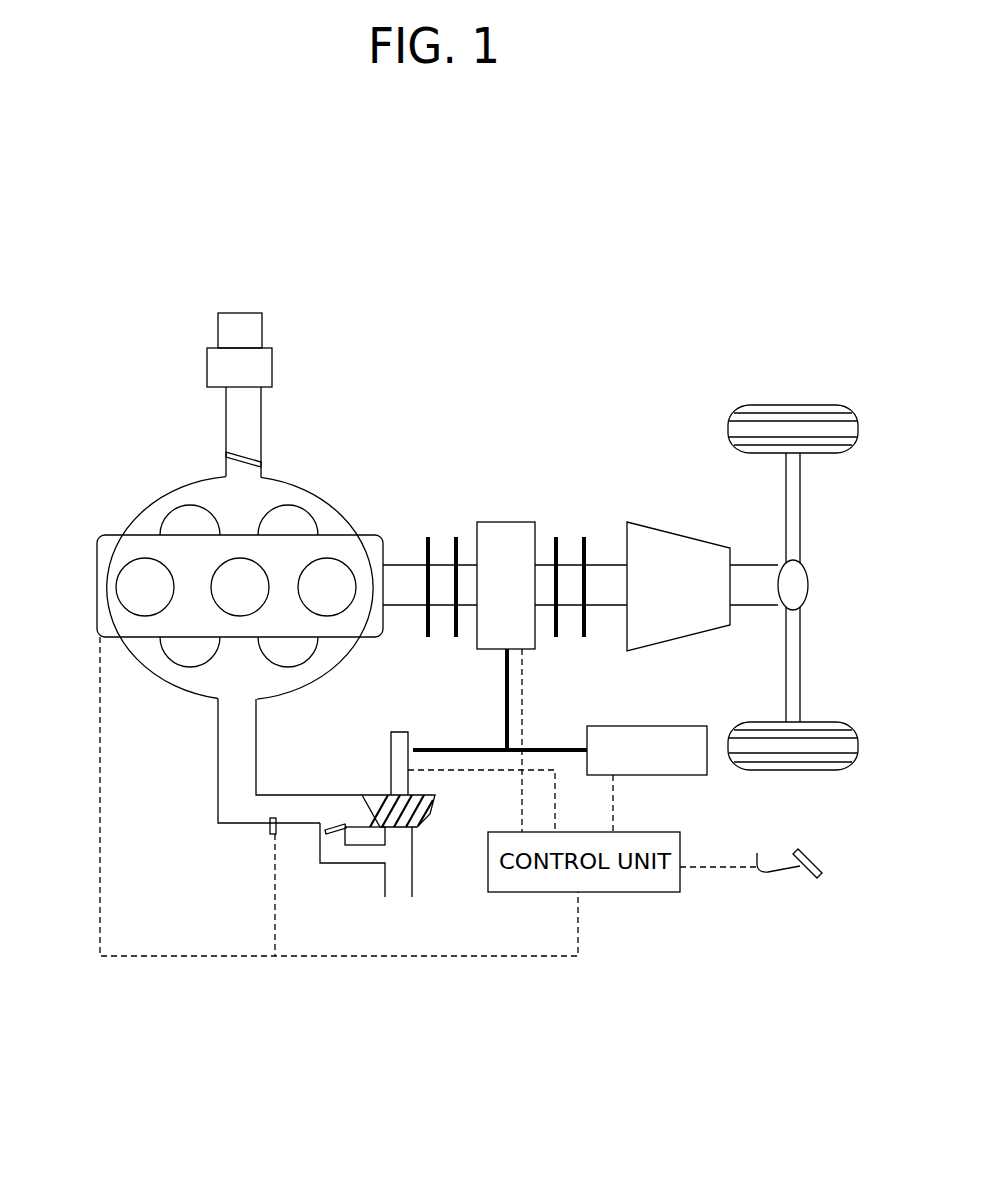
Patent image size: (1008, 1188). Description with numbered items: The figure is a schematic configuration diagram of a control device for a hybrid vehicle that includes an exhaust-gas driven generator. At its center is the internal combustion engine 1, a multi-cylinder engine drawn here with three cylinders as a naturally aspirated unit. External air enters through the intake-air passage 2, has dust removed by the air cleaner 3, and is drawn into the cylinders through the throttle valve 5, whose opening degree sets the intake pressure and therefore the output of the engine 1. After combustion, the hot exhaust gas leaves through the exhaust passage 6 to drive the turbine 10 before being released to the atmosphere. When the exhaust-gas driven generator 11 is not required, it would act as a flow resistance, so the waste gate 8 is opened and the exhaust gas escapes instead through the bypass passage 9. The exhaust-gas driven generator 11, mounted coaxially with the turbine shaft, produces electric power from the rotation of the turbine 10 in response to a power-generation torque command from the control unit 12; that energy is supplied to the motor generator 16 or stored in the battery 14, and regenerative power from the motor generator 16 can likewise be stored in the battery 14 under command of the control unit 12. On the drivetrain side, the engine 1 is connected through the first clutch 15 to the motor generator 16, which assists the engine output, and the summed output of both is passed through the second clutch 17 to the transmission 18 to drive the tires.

The internal combustion engine 1 is at (110, 556).
The intake-air passage 2 is at (237, 333).
The air cleaner 3 is at (215, 361).
The throttle valve 5 is at (226, 470).
The exhaust passage 6 is at (218, 768).
The waste gate 8 is at (330, 826).
The bypass passage 9 is at (325, 866).
The turbine 10 is at (437, 808).
The exhaust-gas driven generator 11 is at (392, 735).
The control unit 12 is at (684, 842).
The battery 14 is at (588, 732).
The first clutch 15 is at (440, 540).
The motor generator 16 is at (497, 520).
The second clutch 17 is at (574, 537).
The transmission 18 is at (656, 530).